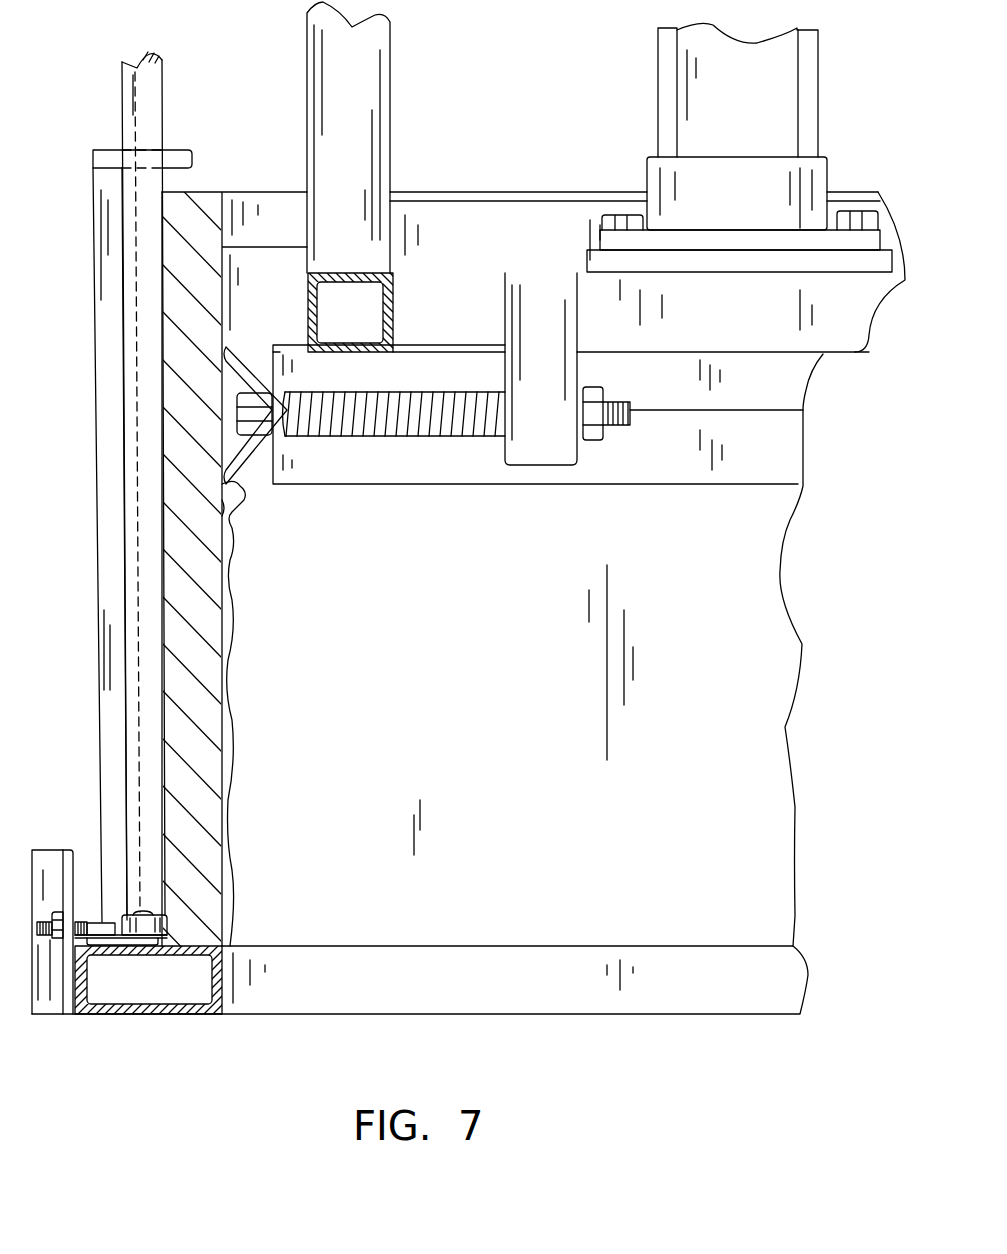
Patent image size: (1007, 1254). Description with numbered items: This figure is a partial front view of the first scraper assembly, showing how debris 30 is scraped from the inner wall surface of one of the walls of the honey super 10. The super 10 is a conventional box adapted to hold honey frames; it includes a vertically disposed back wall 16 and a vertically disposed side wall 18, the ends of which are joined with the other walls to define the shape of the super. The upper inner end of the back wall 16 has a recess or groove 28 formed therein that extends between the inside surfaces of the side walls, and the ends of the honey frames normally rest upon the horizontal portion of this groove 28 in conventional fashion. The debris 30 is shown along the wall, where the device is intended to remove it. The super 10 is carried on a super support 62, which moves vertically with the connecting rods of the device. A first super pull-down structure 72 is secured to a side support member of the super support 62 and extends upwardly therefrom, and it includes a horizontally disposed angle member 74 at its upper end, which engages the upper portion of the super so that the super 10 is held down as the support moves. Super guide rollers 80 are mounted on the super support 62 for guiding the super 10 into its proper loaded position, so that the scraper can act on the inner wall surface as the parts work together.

The honey super 10 is at (210, 753).
The back wall 16 is at (498, 682).
The side wall 18 is at (208, 665).
The recess or groove 28 is at (267, 210).
The debris 30 is at (233, 500).
The super support 62 is at (172, 1020).
The first super pull-down structure 72 is at (98, 575).
The angle member 74 is at (176, 157).
The super guide rollers 80 is at (150, 920).